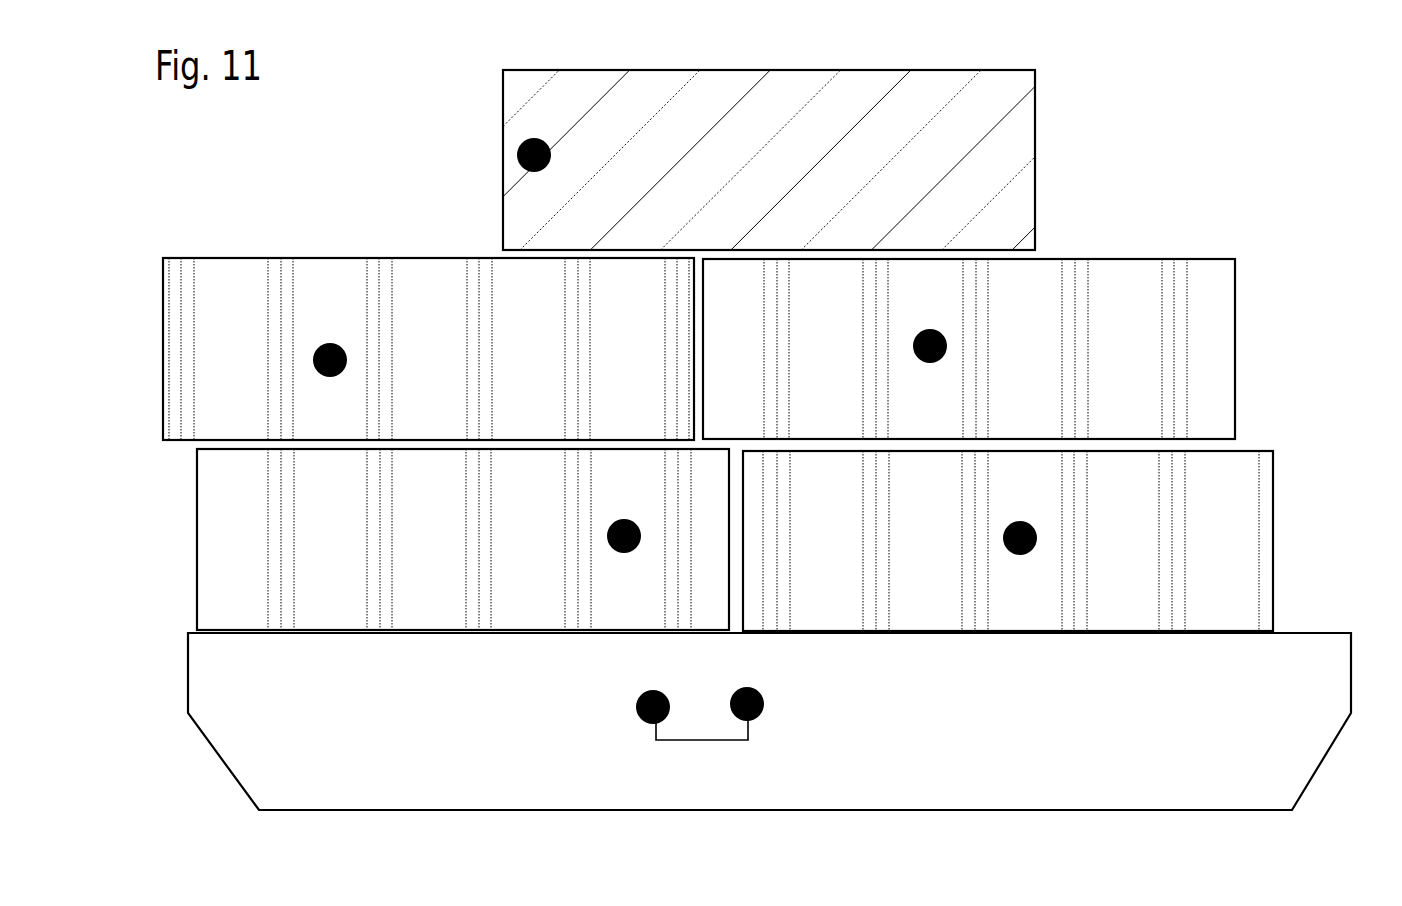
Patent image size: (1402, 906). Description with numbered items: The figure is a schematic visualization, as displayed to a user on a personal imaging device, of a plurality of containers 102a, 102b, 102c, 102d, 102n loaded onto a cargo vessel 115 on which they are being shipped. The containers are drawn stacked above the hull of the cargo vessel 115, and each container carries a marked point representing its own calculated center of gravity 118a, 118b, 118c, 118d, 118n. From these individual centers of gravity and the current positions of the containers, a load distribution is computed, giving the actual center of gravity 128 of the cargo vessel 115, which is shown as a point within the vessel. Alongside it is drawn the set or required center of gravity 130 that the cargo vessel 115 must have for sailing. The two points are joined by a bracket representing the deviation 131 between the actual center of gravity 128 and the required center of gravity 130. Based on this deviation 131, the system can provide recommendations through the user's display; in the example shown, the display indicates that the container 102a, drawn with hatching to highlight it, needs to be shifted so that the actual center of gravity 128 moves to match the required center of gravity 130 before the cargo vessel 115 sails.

The container 102a is at (500, 167).
The container 102b is at (432, 262).
The container 102c is at (1237, 312).
The container 102d is at (194, 538).
The container 102n is at (1270, 511).
The center of gravity 118a is at (551, 150).
The center of gravity 118b is at (324, 345).
The center of gravity 118c is at (943, 333).
The center of gravity 118d is at (612, 546).
The center of gravity 118n is at (1032, 550).
The cargo vessel 115 is at (875, 753).
The actual center of gravity 128 is at (642, 699).
The required center of gravity 130 is at (765, 709).
The deviation 131 is at (691, 741).